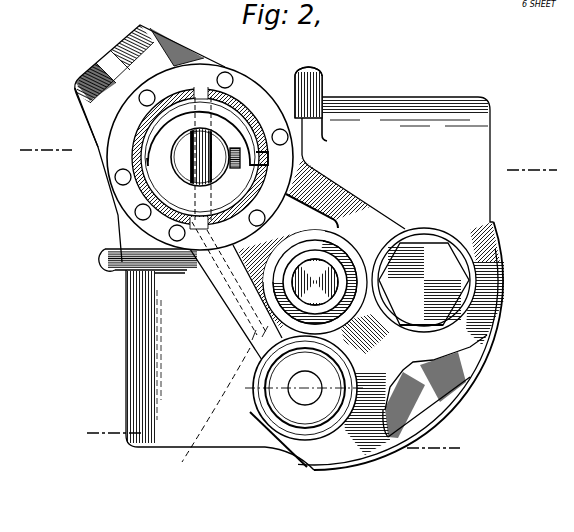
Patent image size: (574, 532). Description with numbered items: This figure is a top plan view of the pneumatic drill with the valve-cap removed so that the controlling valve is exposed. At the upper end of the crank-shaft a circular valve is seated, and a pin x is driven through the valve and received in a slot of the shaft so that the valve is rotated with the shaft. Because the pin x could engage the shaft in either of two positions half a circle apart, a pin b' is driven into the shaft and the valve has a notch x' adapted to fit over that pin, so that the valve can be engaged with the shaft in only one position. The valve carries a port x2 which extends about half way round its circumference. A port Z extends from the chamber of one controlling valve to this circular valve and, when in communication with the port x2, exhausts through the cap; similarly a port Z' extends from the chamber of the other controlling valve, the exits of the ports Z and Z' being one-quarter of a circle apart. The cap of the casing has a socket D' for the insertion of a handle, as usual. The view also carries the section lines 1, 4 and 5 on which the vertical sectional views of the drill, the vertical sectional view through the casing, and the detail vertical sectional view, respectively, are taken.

The socket D' is at (150, 74).
The pin x is at (213, 116).
The pin b' is at (260, 107).
The notch x' is at (318, 86).
The port Z' is at (297, 204).
The section line 1— 1 is at (288, 172).
The port x2 is at (170, 160).
The section line 4— 4 is at (272, 453).
The port Z is at (209, 416).
The section line 5— 5 is at (352, 477).